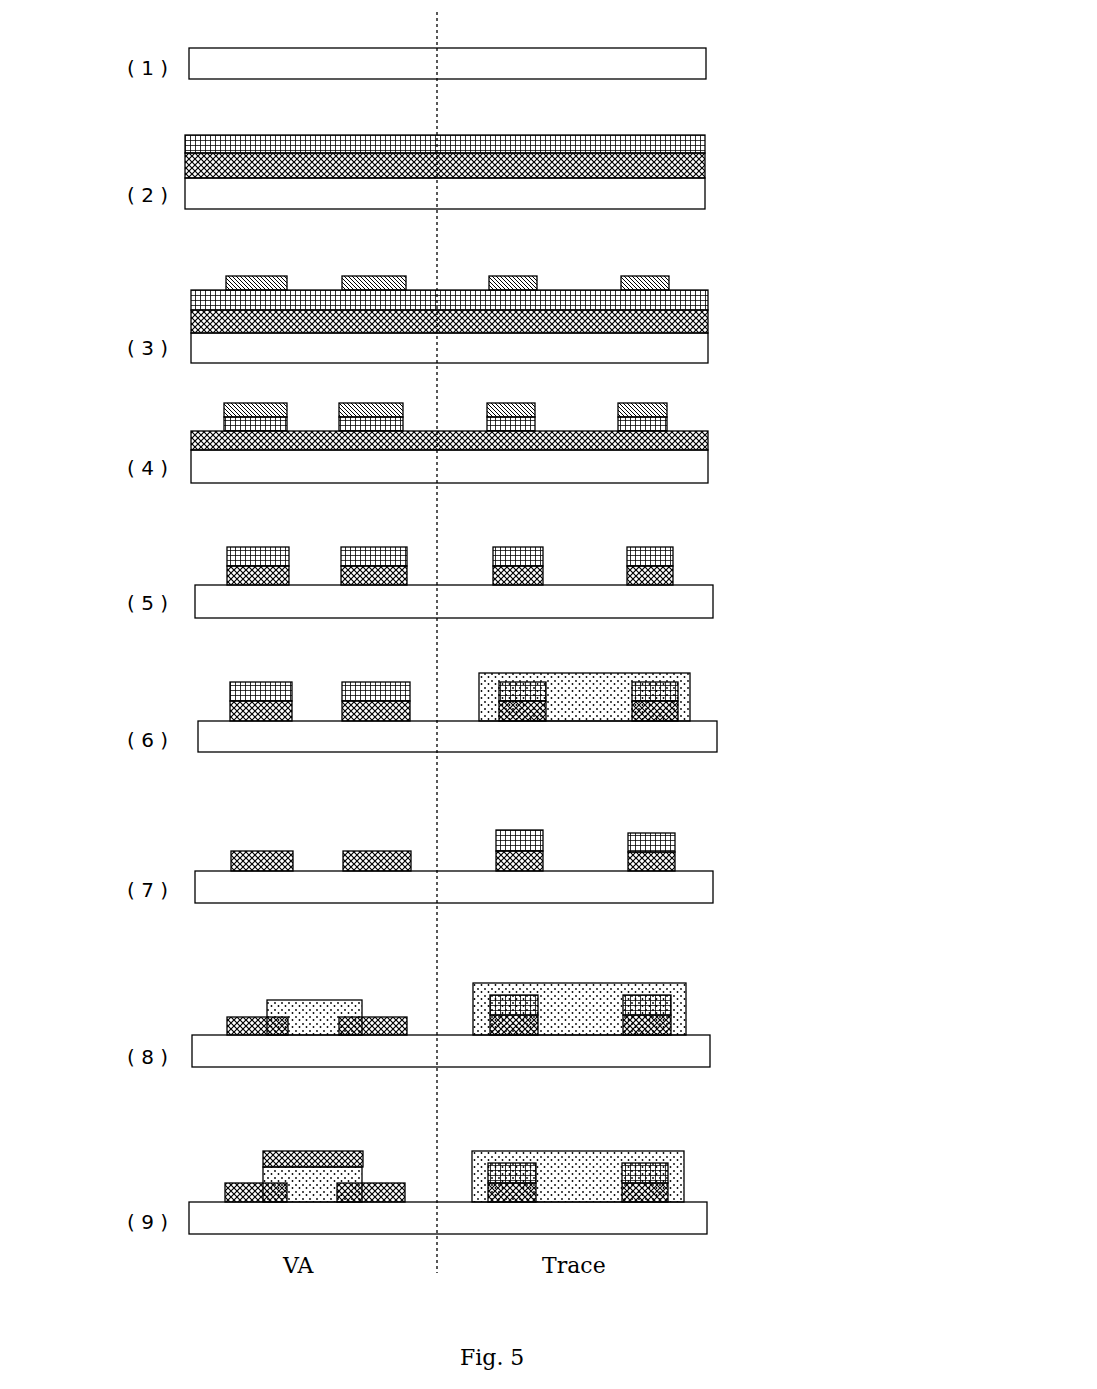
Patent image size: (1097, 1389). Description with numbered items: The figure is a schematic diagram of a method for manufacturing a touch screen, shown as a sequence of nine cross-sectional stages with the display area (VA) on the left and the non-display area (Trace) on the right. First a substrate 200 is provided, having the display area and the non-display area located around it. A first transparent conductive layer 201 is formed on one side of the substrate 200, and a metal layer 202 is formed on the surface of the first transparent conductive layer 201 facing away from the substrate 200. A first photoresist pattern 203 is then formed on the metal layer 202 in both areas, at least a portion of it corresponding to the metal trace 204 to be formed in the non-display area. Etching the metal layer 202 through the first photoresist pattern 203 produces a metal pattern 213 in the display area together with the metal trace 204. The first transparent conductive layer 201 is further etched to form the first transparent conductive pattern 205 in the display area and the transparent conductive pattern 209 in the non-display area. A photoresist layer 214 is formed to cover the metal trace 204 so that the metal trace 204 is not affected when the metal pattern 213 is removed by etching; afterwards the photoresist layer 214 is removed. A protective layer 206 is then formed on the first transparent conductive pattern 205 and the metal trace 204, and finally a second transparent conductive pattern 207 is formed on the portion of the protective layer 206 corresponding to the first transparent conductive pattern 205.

The substrate 200 is at (706, 47).
The first transparent conductive layer 201 is at (706, 167).
The metal layer 202 is at (706, 136).
The first photoresist pattern 203 is at (669, 276).
The metal trace 204 is at (667, 419).
The metal pattern 213 is at (223, 422).
The first transparent conductive pattern 205 is at (227, 583).
The transparent conductive pattern 209 is at (673, 583).
The photoresist layer 214 is at (690, 676).
The protective layer 206 is at (686, 983).
The second transparent conductive pattern 207 is at (263, 1151).